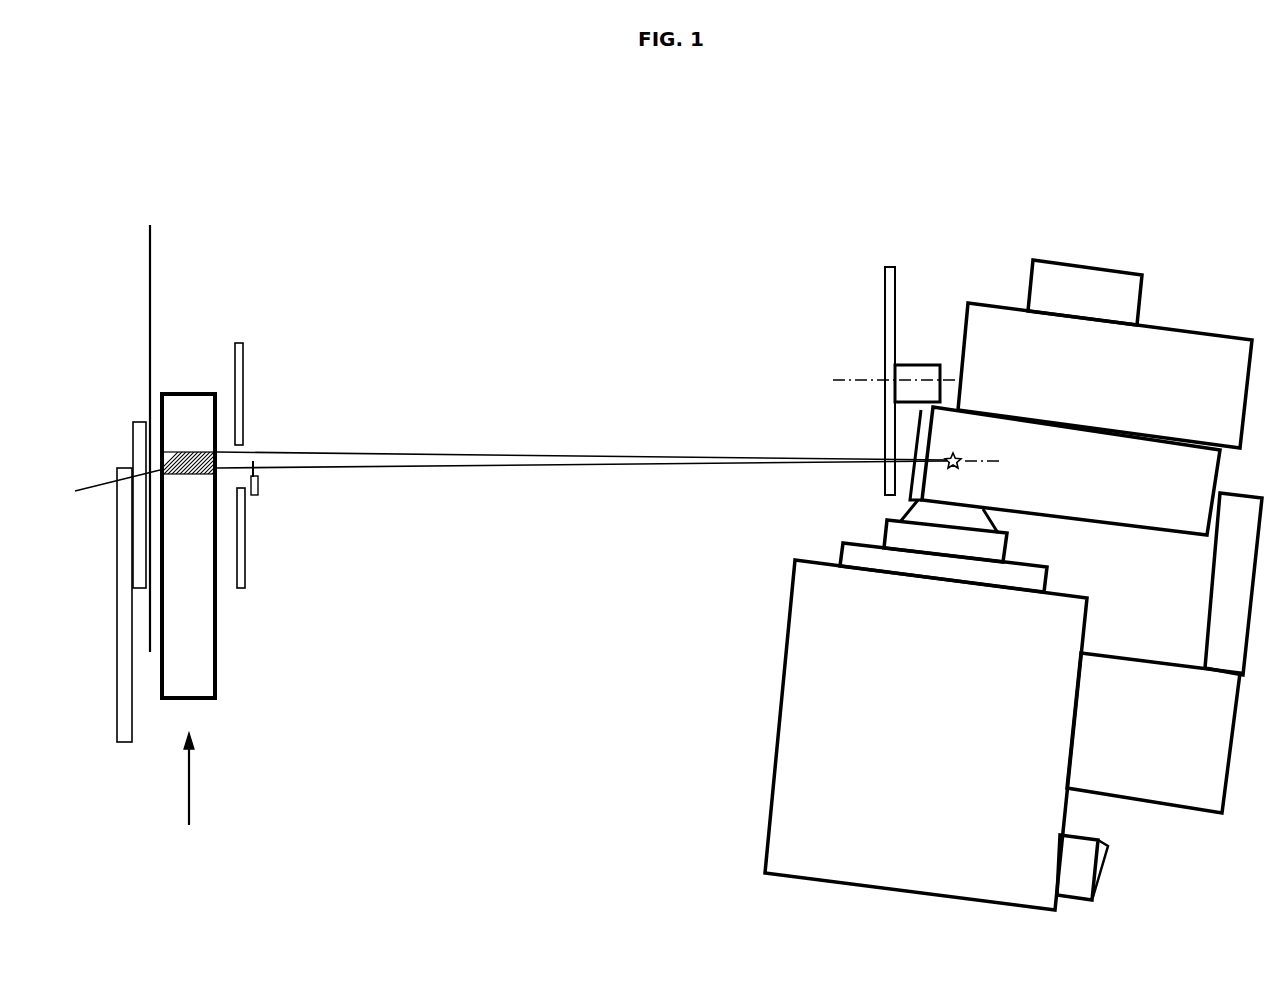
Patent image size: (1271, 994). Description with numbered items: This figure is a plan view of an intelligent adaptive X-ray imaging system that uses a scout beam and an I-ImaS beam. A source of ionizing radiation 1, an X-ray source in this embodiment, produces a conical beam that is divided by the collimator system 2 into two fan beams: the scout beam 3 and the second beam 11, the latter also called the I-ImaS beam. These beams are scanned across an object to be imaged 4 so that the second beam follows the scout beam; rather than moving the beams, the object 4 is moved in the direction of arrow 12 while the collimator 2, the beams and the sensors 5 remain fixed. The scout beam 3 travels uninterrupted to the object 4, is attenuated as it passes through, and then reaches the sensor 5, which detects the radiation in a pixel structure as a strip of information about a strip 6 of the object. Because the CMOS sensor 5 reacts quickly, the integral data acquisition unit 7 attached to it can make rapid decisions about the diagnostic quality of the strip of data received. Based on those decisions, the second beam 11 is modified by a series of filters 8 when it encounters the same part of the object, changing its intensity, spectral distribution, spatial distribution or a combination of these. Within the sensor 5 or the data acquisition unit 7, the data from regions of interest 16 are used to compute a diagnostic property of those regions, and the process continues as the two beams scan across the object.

The source of ionizing radiation 1 is at (818, 731).
The collimator system 2 is at (885, 413).
The scout beam 3 is at (338, 452).
The object to be imaged 4 is at (190, 674).
The sensor 5 is at (140, 432).
The strip of the object 6 is at (197, 392).
The data acquisition unit 7 is at (121, 675).
The filters 8 is at (257, 500).
The second beam 11 is at (358, 470).
The arrow 12 is at (190, 790).
The regions of interest 16 is at (75, 491).